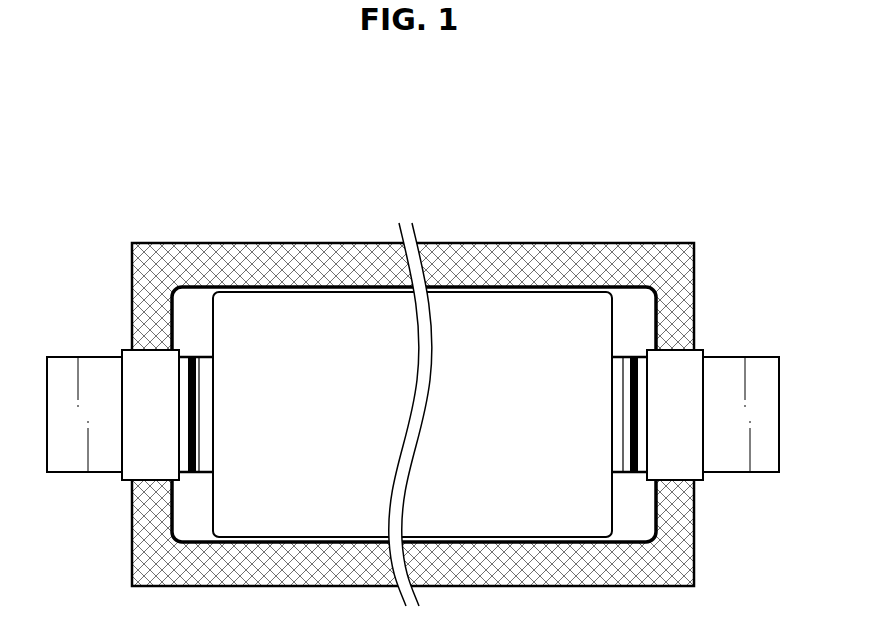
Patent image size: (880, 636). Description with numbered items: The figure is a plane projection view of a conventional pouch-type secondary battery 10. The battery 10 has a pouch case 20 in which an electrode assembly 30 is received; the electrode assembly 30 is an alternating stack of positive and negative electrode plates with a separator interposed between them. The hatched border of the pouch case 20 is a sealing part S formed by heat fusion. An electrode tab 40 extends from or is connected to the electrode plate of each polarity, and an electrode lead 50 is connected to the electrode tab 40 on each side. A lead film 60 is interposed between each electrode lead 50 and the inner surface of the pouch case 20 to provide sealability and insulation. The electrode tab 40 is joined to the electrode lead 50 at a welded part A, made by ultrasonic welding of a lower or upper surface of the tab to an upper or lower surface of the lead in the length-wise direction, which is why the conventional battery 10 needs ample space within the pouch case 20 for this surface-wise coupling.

The pouch-type secondary battery 10 is at (203, 154).
The pouch case 20 is at (413, 386).
The sealing part S is at (147, 259).
The electrode assembly 30 is at (475, 420).
The electrode tab 40 is at (206, 363).
The welded part A is at (194, 357).
The electrode lead 50 is at (54, 361).
The lead film 60 is at (128, 358).